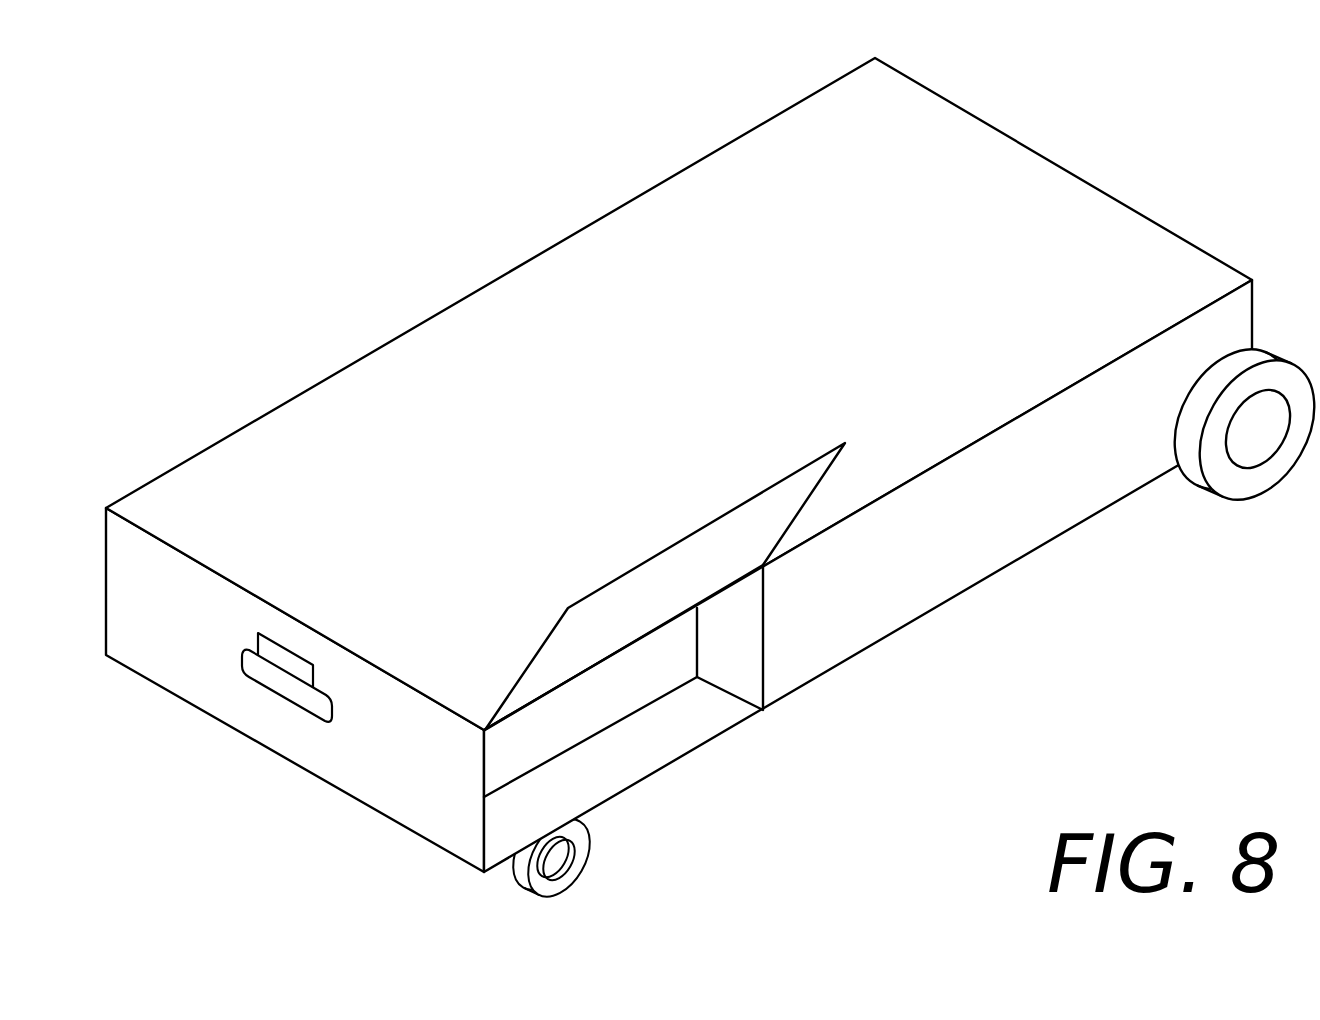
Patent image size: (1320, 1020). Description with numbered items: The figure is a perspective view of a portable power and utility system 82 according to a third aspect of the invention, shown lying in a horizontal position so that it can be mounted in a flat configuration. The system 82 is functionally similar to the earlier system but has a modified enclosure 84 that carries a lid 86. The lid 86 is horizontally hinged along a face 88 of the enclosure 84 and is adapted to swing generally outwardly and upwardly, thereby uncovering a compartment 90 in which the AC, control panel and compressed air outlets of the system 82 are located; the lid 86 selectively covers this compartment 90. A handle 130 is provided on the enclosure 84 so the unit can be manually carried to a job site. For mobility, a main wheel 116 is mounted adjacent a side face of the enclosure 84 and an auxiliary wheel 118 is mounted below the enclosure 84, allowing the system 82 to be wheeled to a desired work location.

The power and utility system 82 is at (365, 203).
The enclosure 84 is at (106, 508).
The lid 86 is at (568, 608).
The face 88 is at (905, 598).
The compartment 90 is at (613, 727).
The main wheels 116 is at (1193, 483).
The auxiliary wheels 118 is at (580, 876).
The handle 130 is at (303, 715).